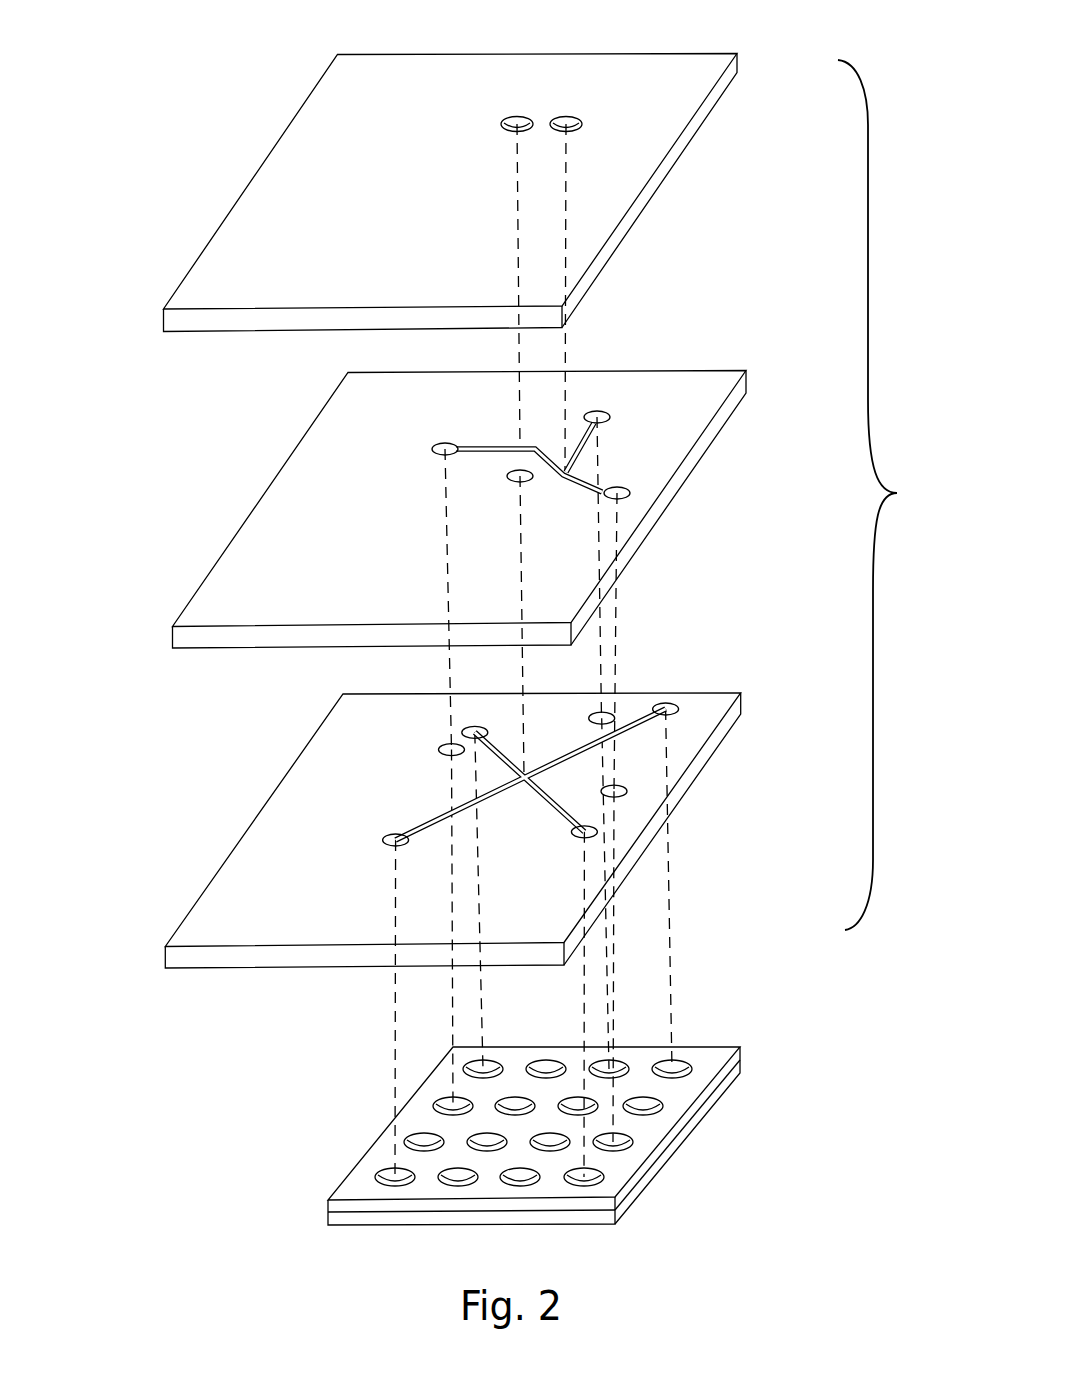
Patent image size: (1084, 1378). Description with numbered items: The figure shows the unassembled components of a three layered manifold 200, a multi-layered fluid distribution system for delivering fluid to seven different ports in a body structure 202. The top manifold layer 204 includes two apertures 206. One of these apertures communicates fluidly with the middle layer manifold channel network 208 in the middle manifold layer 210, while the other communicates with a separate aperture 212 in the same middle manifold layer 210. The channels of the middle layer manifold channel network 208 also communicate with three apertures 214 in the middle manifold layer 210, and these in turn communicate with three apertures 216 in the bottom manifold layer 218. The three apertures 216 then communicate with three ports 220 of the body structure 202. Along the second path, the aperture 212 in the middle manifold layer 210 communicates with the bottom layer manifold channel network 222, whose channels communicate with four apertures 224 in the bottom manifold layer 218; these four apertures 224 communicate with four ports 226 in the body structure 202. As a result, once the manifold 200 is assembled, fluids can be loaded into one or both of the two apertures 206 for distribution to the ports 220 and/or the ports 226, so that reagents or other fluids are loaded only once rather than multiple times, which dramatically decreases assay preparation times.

The three layered manifold 200 is at (891, 495).
The body structure 202 is at (695, 1123).
The top manifold layer 204 is at (618, 249).
The apertures 206 is at (518, 116).
The middle layer manifold channel network 208 is at (519, 446).
The middle manifold layer 210 is at (641, 544).
The aperture 212 is at (509, 482).
The apertures 214 is at (435, 445).
The apertures 216 is at (441, 748).
The bottom manifold layer 218 is at (670, 818).
The ports 220 is at (608, 1060).
The bottom layer manifold channel network 222 is at (431, 821).
The apertures 224 is at (472, 727).
The ports 226 is at (670, 1060).